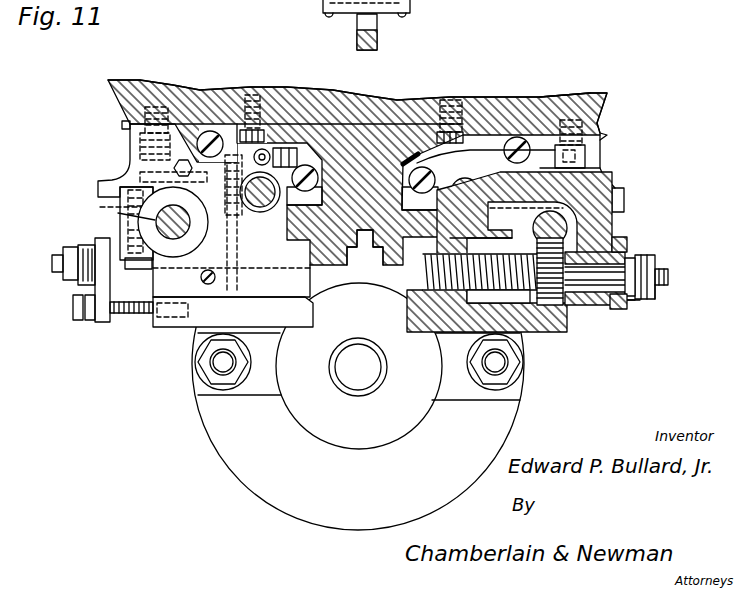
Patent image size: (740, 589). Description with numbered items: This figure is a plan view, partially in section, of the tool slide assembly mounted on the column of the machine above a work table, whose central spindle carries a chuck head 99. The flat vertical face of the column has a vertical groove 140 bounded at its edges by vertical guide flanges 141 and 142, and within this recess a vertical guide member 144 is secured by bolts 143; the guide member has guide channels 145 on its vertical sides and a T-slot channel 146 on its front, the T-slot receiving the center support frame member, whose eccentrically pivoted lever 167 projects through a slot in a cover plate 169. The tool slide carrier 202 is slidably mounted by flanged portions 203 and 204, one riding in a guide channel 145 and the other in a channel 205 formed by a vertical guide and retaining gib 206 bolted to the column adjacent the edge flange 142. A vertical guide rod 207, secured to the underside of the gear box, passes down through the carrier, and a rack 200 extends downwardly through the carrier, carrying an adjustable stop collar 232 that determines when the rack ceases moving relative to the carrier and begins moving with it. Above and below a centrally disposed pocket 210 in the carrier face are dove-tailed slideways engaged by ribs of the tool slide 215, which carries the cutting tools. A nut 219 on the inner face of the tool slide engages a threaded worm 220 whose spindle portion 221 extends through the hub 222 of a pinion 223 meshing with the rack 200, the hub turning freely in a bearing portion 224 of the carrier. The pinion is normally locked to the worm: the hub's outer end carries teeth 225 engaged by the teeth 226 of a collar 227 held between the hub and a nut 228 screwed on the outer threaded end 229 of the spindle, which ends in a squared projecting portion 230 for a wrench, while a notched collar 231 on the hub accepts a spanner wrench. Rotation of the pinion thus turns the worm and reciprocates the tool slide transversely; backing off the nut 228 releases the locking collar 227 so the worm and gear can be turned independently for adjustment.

The chuck head 99 is at (212, 419).
The vertical groove 140 is at (410, 160).
The vertical guide flange 141 is at (122, 127).
The vertical guide flange 142 is at (604, 140).
The bolts 143 is at (252, 118).
The vertical guide member 144 is at (363, 140).
The guide channels 145 is at (312, 145).
The T-slot channel 146 is at (363, 232).
The lever 167 is at (378, 24).
The cover plate 169 is at (343, 15).
The rack 200 is at (118, 213).
The tool slide carrier 202 is at (187, 263).
The flanged portion 203 is at (497, 140).
The flanged portion 204 is at (522, 128).
The channel 205 is at (605, 129).
The vertical guide and retaining gib 206 is at (588, 159).
The vertical guide rod 207 is at (262, 223).
The pocket 210 is at (487, 247).
The tool slide 215 is at (197, 318).
The nut 219 is at (420, 328).
The threaded worm 220 is at (513, 298).
The spindle portion 221 is at (587, 305).
The hub 222 is at (614, 249).
The pinion 223 is at (557, 332).
The bearing portion 224 is at (613, 225).
The teeth 225 is at (632, 302).
The teeth 226 is at (633, 300).
The collar 227 is at (640, 249).
The nut 228 is at (650, 256).
The outer threaded end 229 is at (656, 285).
The squared projecting portion 230 is at (668, 274).
The notched collar 231 is at (622, 312).
The stop collar 232 is at (153, 236).